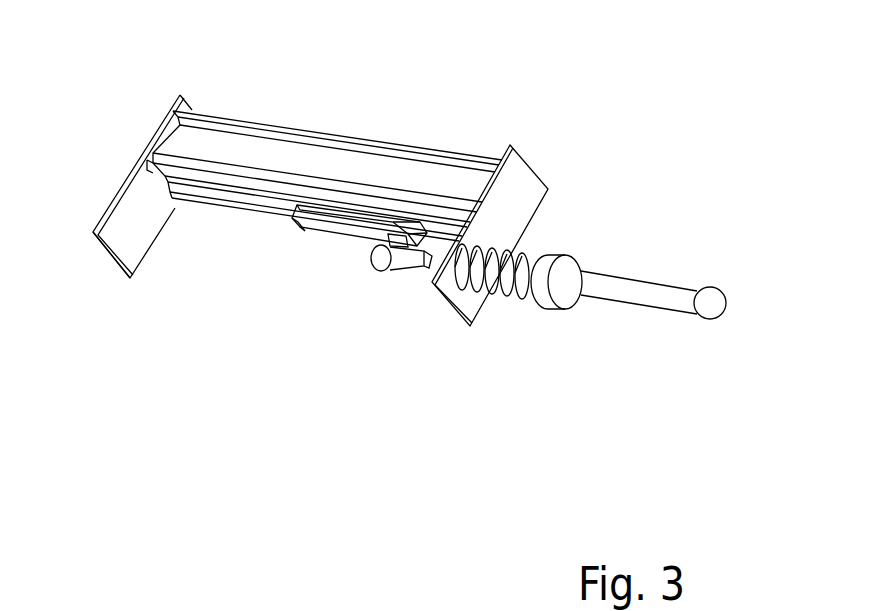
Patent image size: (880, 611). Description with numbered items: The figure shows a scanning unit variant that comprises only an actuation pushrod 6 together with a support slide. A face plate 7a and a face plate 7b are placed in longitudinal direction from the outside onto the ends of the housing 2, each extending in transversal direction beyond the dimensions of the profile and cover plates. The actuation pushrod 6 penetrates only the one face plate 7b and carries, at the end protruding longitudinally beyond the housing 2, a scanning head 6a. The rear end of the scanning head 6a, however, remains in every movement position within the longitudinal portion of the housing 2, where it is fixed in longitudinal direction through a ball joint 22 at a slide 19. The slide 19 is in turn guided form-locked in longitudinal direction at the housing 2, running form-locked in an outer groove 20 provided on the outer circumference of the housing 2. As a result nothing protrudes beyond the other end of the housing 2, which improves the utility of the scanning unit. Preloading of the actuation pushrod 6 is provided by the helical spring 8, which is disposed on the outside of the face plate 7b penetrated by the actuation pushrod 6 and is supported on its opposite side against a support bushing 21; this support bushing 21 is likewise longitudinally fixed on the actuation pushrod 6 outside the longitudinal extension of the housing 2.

The housing 2 is at (413, 136).
The actuation pushrod 6 is at (642, 307).
The scanning head 6a is at (716, 321).
The face plate 7a is at (172, 92).
The face plate 7b is at (554, 174).
The helical spring 8 is at (517, 302).
The slide 19 is at (360, 202).
The outer groove 20 is at (138, 220).
The support bushing 21 is at (545, 311).
The ball joint 22 is at (380, 272).